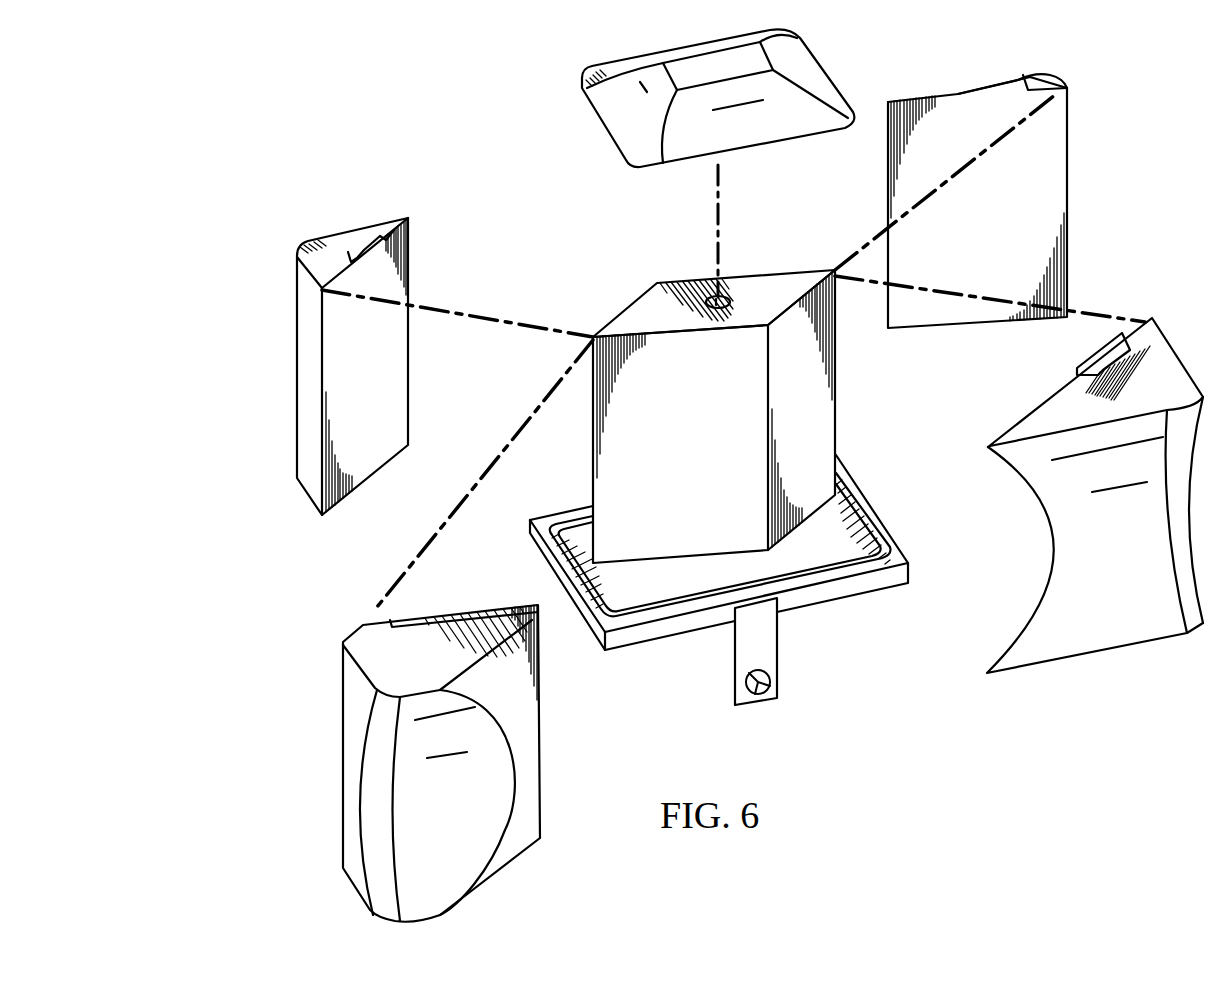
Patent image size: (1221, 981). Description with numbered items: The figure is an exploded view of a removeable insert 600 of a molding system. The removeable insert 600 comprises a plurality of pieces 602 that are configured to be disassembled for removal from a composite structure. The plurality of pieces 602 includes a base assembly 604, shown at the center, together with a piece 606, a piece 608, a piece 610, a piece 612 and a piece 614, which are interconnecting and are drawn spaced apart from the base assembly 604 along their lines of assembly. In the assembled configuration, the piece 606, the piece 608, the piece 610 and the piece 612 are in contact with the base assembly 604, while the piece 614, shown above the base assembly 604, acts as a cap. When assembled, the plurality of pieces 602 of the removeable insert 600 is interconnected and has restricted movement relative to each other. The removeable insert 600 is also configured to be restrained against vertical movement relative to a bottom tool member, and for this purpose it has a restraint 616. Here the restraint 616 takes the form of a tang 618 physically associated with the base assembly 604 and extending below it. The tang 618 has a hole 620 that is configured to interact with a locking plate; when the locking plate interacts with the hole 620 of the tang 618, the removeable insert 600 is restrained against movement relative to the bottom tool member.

The removeable insert 600 is at (250, 84).
The plurality of pieces 602 is at (395, 122).
The base assembly 604 is at (642, 310).
The piece 606 is at (332, 243).
The piece 608 is at (348, 835).
The piece 610 is at (1057, 172).
The piece 612 is at (1170, 362).
The piece 614 is at (613, 105).
The restraint 616 is at (721, 667).
The tang 618 is at (775, 648).
The hole 620 is at (758, 697).